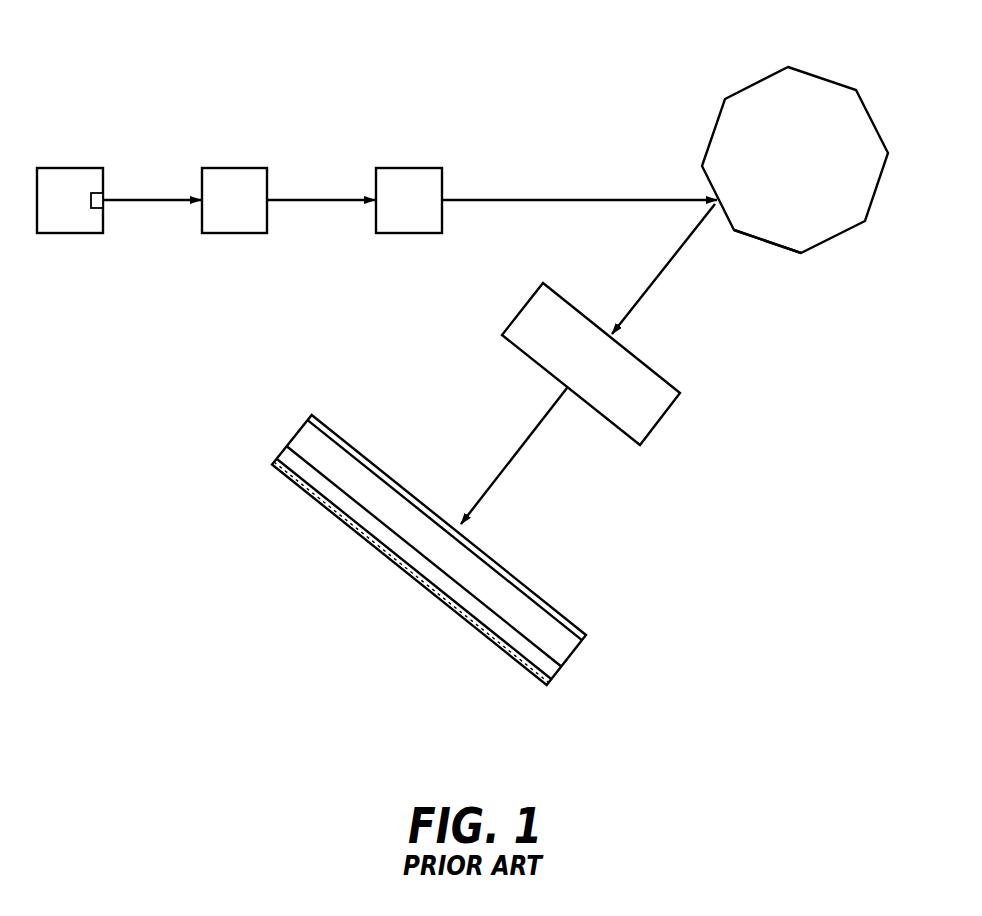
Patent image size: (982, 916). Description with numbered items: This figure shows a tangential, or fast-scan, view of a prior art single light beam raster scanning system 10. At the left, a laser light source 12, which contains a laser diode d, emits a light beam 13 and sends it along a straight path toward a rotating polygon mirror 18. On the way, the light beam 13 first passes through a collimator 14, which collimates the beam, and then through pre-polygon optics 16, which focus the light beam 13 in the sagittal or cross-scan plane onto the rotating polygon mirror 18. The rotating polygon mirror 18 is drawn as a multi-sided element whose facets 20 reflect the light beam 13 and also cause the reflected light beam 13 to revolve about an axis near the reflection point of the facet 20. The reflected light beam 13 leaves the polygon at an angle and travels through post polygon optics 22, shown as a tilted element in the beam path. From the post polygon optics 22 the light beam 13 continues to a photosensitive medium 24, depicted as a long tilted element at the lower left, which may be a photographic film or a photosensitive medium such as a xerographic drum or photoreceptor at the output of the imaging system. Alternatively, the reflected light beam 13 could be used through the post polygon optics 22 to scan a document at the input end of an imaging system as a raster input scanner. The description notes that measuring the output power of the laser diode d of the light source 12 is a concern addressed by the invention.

The single light beam raster scanning system 10 is at (358, 58).
The laser light source 12 is at (50, 168).
The laser diode d is at (98, 206).
The light beam 13 is at (117, 203).
The collimator 14 is at (215, 168).
The pre-polygon optics 16 is at (388, 168).
The rotating polygon mirror 18 is at (808, 88).
The facets 20 is at (768, 247).
The post polygon optics 22 is at (659, 423).
The photosensitive medium 24 is at (553, 670).